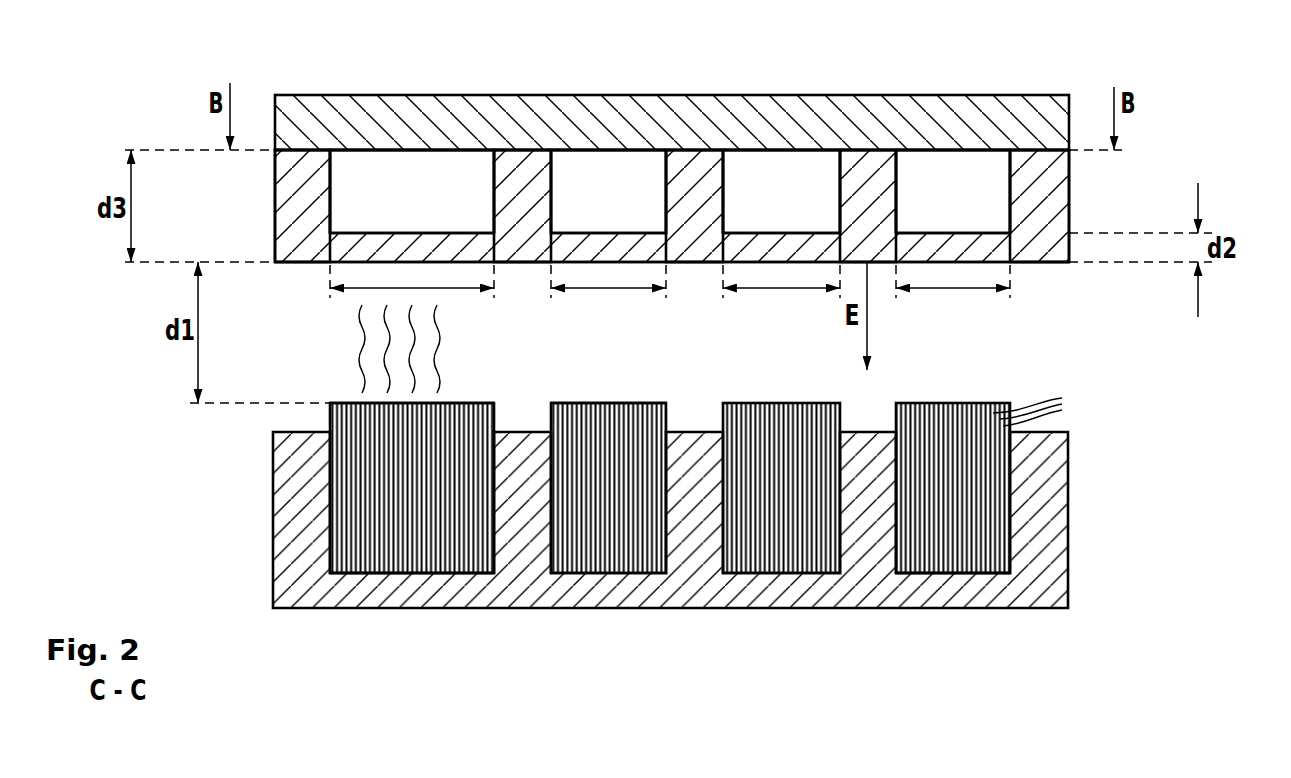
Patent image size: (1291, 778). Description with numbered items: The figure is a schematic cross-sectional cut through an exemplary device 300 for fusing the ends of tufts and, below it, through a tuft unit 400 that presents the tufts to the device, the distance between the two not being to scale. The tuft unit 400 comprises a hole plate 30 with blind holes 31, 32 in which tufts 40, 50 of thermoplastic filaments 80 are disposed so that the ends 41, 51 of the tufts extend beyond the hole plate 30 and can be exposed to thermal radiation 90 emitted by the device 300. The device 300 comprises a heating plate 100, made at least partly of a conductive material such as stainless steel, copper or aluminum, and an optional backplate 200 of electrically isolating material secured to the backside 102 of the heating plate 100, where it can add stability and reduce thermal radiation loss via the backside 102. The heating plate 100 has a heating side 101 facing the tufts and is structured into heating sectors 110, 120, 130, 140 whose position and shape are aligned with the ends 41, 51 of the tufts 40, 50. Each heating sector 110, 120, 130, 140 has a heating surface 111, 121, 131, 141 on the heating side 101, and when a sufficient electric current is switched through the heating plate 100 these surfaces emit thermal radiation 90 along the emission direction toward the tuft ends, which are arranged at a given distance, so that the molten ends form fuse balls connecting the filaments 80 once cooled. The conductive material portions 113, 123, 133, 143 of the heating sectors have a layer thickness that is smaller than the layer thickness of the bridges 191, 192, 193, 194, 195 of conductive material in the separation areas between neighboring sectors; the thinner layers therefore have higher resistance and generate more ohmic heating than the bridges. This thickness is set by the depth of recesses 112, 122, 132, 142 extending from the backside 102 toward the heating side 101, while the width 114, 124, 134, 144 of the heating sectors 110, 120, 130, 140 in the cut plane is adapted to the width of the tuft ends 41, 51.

The hole plate 30 is at (1068, 535).
The blind hole 31 is at (985, 577).
The blind hole 32 is at (351, 577).
The tuft 40 is at (443, 555).
The end of tuft 41 is at (474, 401).
The tuft 50 is at (612, 556).
The end of tuft 51 is at (639, 401).
The thermoplastic filaments 80 is at (1043, 404).
The thermal radiation 90 is at (344, 358).
The heating plate 100 is at (1069, 200).
The heating side 101 is at (1036, 266).
The backside 102 is at (303, 149).
The heating sector 110 is at (431, 182).
The heating surface 111 is at (377, 264).
The recess 112 is at (373, 170).
The conductive material portion 113 is at (455, 250).
The width of heating sector 114 is at (447, 292).
The heating sector 120 is at (625, 182).
The heating surface 121 is at (605, 264).
The recess 122 is at (590, 170).
The conductive material portion 123 is at (627, 250).
The width of heating sector 124 is at (608, 292).
The heating sector 130 is at (795, 182).
The heating surface 131 is at (777, 264).
The recess 132 is at (760, 170).
The conductive material portion 133 is at (800, 250).
The width of heating sector 134 is at (780, 292).
The heating sector 140 is at (969, 182).
The heating surface 141 is at (948, 264).
The recess 142 is at (933, 170).
The conductive material portion 143 is at (968, 250).
The width of heating sector 144 is at (953, 294).
The bridge 191 is at (298, 193).
The bridge 192 is at (527, 170).
The bridge 193 is at (698, 170).
The bridge 194 is at (870, 170).
The bridge 195 is at (1042, 170).
The backplate 200 is at (1069, 118).
The device for fusing the ends of tufts 300 is at (1169, 148).
The tuft unit 400 is at (1166, 468).